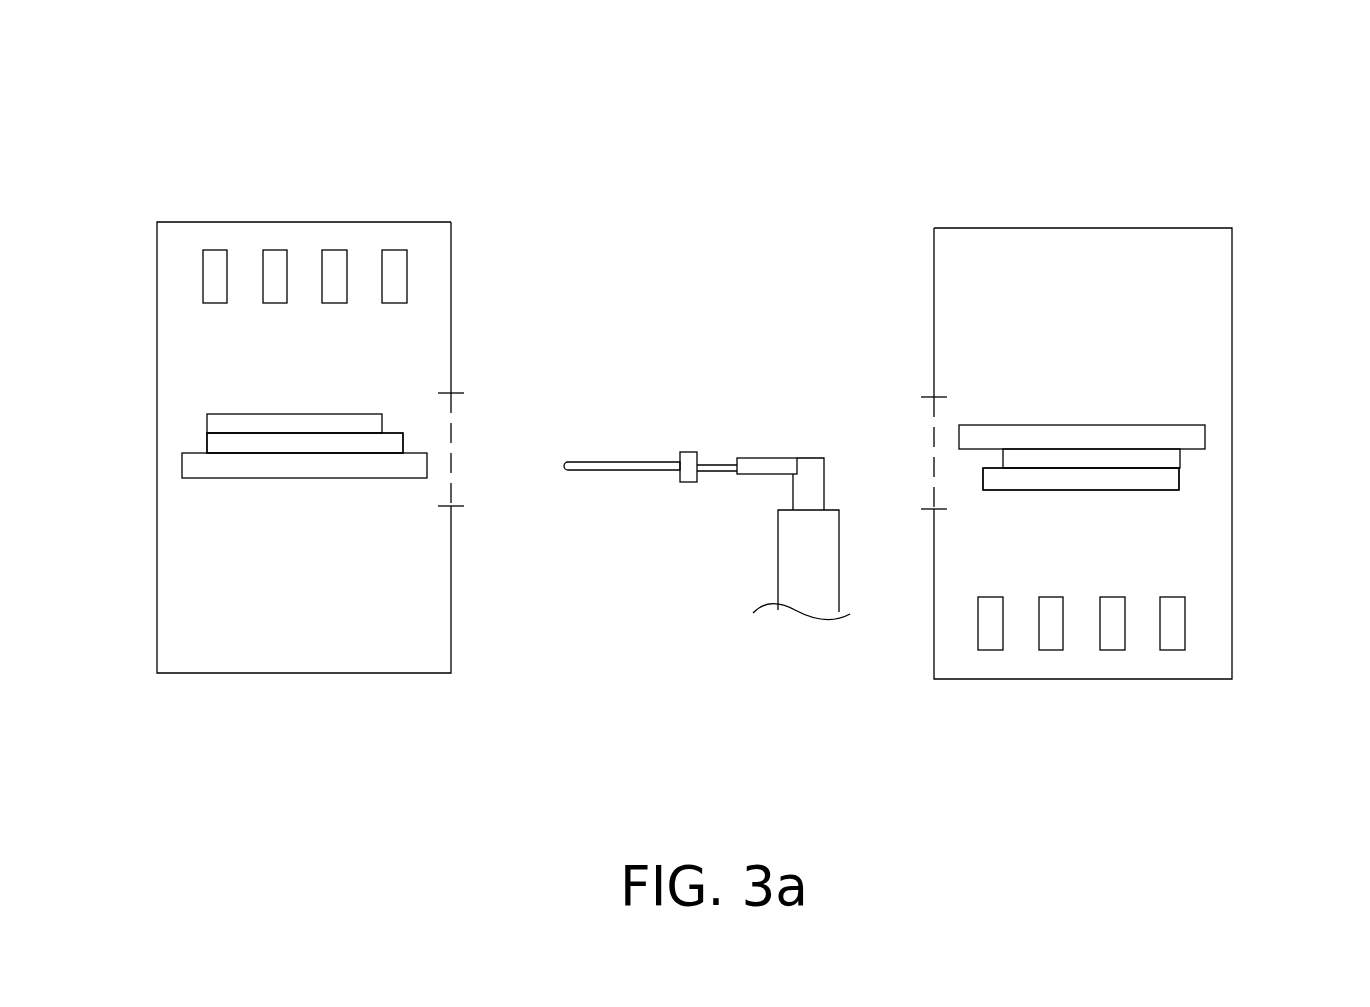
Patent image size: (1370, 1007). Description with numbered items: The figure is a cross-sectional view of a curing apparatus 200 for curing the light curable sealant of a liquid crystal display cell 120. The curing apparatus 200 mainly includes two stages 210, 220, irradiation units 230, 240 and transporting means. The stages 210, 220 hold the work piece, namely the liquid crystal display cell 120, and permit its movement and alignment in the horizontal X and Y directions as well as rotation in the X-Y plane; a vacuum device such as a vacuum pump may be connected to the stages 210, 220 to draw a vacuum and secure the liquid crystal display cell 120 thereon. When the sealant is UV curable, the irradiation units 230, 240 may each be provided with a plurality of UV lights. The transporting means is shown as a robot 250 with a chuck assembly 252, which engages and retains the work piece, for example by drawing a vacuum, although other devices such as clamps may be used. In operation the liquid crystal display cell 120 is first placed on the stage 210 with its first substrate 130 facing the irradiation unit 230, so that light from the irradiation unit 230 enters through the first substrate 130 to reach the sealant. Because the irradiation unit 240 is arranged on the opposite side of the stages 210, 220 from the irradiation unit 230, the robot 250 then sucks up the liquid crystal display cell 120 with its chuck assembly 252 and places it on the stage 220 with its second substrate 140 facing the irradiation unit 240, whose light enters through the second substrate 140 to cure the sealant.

The curing apparatus 200 is at (482, 130).
The liquid crystal display cell 120 is at (292, 412).
The first substrate 130 is at (218, 425).
The second substrate 140 is at (220, 443).
The stage 210 is at (197, 465).
The stage 220 is at (1198, 437).
The irradiation unit 230 is at (212, 250).
The irradiation unit 240 is at (1048, 651).
The robot 250 is at (778, 458).
The chuck assembly 252 is at (616, 464).